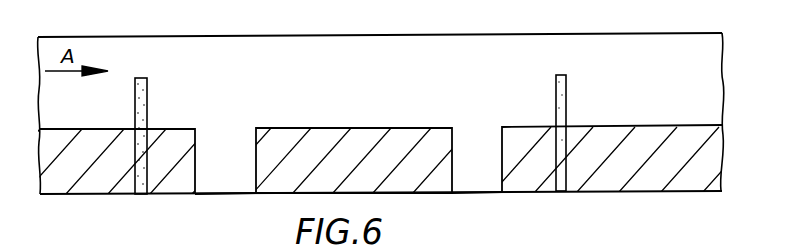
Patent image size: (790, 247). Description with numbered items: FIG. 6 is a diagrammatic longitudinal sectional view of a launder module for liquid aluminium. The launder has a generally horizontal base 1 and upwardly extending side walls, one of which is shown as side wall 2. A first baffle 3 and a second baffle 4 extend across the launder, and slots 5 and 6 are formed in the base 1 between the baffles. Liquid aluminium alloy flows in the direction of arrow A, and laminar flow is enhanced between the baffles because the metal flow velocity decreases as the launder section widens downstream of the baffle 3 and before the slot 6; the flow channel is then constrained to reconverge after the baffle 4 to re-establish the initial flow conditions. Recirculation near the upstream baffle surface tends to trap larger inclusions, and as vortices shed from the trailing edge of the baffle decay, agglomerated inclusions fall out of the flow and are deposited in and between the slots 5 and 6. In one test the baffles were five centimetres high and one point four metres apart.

The base 1 is at (62, 129).
The side wall 2 is at (685, 49).
The first baffle 3 is at (147, 106).
The second baffle 4 is at (566, 102).
The slot 5 is at (216, 182).
The slot 6 is at (470, 182).